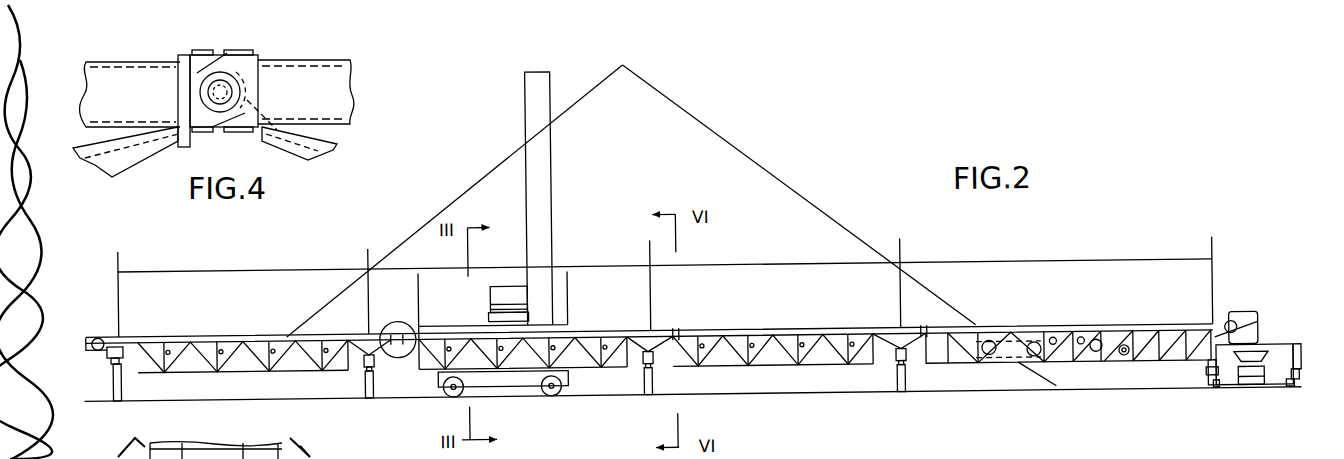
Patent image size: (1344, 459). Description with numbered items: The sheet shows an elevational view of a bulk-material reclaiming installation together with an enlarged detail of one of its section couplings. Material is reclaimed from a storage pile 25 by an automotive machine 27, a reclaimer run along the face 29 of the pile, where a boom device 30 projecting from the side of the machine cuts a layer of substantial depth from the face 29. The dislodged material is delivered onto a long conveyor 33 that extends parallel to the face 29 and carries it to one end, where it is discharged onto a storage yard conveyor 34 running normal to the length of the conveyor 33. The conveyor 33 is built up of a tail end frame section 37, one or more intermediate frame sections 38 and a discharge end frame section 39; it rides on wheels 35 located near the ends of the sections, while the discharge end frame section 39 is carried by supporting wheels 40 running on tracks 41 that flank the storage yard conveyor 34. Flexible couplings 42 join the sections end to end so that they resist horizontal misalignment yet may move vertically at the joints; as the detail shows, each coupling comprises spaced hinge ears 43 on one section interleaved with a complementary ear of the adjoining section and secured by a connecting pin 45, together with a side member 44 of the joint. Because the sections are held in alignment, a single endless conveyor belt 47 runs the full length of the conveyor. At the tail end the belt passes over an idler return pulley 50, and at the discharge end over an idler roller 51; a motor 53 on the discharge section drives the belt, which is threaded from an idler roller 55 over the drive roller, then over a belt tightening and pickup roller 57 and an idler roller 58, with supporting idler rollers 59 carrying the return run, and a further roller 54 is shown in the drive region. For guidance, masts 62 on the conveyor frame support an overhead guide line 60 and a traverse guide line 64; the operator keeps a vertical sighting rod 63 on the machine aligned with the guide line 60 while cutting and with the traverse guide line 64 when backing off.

In FIG. 2, the storage pile 25 is at (727, 147).
In FIG. 2, the automotive machine 27 is at (513, 397).
In FIG. 2, the face 29 is at (797, 221).
In FIG. 2, the boom device 30 is at (553, 199).
In FIG. 2, the conveyor 33 is at (809, 380).
In FIG. 2, the storage yard conveyor 34 is at (1270, 372).
In FIG. 2, the wheels 35 is at (114, 396).
In FIG. 2, the tail end frame section 37 is at (292, 380).
In FIG. 2, the intermediate frame sections 38 is at (607, 381).
In FIG. 2, the discharge end frame section 39 is at (1157, 378).
In FIG. 2, the supporting wheels 40 is at (1207, 387).
In FIG. 2, the tracks 41 is at (1215, 401).
In FIG. 4, the flexible couplings 42 is at (193, 152).
In FIG. 2, the flexible couplings 42 is at (396, 331).
In FIG. 4, the hinge ears 43 is at (240, 57).
In FIG. 4, the clamp plate 44 is at (198, 58).
In FIG. 4, the connecting pin 45 is at (210, 93).
In FIG. 2, the endless conveyor belt 47 is at (1097, 350).
In FIG. 2, the idler return pulley 50 is at (99, 336).
In FIG. 2, the idler roller 51 is at (1229, 333).
In FIG. 2, the motor 53 is at (1123, 367).
In FIG. 2, the pulley 54 is at (1081, 357).
In FIG. 2, the idler roller 55 is at (1037, 368).
In FIG. 2, the belt tightening and pickup roller 57 is at (994, 366).
In FIG. 2, the idler roller 58 is at (1052, 347).
In FIG. 2, the supporting idler rollers 59 is at (212, 375).
In FIG. 2, the overhead guide line 60 is at (1112, 273).
In FIG. 2, the masts 62 is at (118, 304).
In FIG. 2, the sighting rod 63 is at (417, 281).
In FIG. 2, the traverse guide line 64 is at (784, 271).